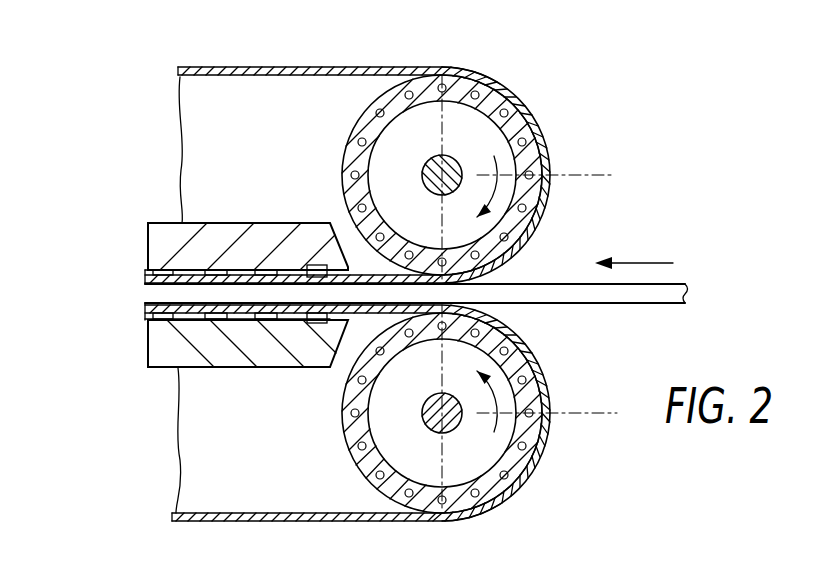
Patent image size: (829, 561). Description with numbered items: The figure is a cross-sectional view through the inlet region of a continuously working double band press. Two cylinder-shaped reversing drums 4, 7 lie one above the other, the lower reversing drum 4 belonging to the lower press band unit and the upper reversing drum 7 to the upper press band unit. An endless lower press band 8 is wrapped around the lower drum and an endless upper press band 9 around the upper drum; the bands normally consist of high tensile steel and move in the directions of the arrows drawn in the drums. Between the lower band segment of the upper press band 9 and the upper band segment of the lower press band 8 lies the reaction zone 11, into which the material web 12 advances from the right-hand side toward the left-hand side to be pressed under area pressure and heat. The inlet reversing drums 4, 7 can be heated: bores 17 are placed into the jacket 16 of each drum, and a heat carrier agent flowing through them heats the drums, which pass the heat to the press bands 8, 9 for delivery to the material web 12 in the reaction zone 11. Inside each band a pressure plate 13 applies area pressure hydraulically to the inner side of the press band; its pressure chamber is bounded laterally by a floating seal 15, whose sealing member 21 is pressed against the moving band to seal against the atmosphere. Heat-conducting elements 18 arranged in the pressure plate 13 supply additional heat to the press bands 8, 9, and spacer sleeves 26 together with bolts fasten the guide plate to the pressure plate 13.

The reversing drum 4 is at (488, 448).
The reversing drum 7 is at (472, 137).
The press band 8 is at (293, 522).
The press band 9 is at (333, 67).
The reaction zone 11 is at (245, 294).
The material web 12 is at (597, 293).
The pressure plate 13 is at (173, 244).
The floating seal 15 is at (313, 265).
The jacket 16 is at (515, 126).
The bores 17 is at (469, 82).
The heat-conducting elements 18 is at (155, 272).
The sealing member 21 is at (529, 266).
The spacer sleeves 26 is at (237, 223).